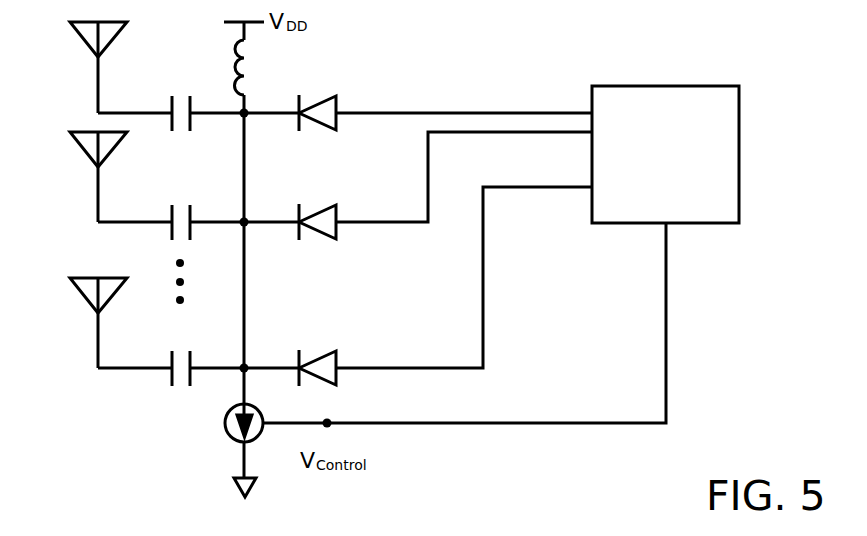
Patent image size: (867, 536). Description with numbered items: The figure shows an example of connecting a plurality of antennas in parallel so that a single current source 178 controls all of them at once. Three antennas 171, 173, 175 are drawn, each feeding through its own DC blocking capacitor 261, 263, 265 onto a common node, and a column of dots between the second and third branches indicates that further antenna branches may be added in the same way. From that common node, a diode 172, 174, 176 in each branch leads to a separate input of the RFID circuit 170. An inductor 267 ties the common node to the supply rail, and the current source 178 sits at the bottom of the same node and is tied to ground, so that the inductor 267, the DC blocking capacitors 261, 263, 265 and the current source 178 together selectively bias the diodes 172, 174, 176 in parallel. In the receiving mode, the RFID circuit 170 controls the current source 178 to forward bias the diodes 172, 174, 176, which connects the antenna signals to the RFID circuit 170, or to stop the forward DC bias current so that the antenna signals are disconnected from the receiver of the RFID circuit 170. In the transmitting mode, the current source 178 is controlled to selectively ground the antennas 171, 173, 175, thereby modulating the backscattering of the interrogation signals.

The RFID circuit 170 is at (681, 178).
The antenna 171 is at (82, 44).
The diode 172 is at (323, 102).
The antenna 173 is at (82, 151).
The diode 174 is at (323, 211).
The antenna 175 is at (84, 298).
The diode 176 is at (323, 357).
The current source 178 is at (226, 423).
The DC blocking capacitor 261 is at (170, 107).
The DC blocking capacitor 263 is at (170, 213).
The DC blocking capacitor 265 is at (170, 365).
The inductor 267 is at (240, 58).